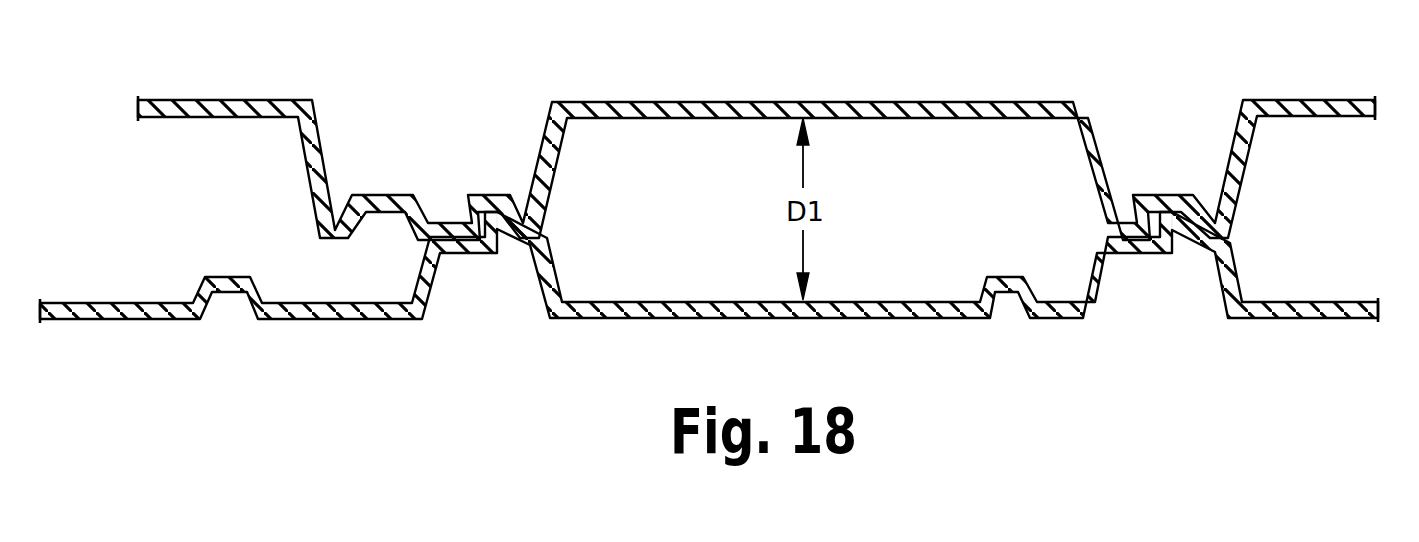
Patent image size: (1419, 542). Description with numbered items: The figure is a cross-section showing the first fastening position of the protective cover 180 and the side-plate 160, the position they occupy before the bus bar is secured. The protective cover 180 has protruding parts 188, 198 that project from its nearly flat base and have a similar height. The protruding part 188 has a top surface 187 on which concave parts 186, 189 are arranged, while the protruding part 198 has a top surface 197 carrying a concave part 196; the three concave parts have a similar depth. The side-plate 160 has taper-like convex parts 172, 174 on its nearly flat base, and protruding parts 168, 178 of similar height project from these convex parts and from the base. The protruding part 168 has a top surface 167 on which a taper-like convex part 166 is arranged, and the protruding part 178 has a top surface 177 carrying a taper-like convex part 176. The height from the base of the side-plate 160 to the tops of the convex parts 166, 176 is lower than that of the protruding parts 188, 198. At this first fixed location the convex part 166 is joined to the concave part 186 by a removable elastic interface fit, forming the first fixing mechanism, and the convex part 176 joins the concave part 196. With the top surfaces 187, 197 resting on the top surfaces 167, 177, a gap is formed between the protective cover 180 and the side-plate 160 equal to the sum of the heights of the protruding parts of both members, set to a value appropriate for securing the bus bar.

The side-plate 160 is at (1340, 302).
The taper-like convex part 166 is at (492, 225).
The top surface 167 is at (516, 256).
The protruding part 168 is at (558, 281).
The taper-like convex part 172 is at (223, 277).
The taper-like convex part 174 is at (1007, 293).
The convex part 176 is at (1166, 228).
The top surface 177 is at (1203, 248).
The protruding part 178 is at (1237, 283).
The protective cover 180 is at (1327, 100).
The concave part 186 is at (487, 195).
The top surface 187 is at (337, 222).
The protruding part 188 is at (318, 151).
The concave part 189 is at (391, 195).
The concave part 196 is at (1168, 195).
The top surface 197 is at (1118, 221).
The protruding part 198 is at (1090, 147).